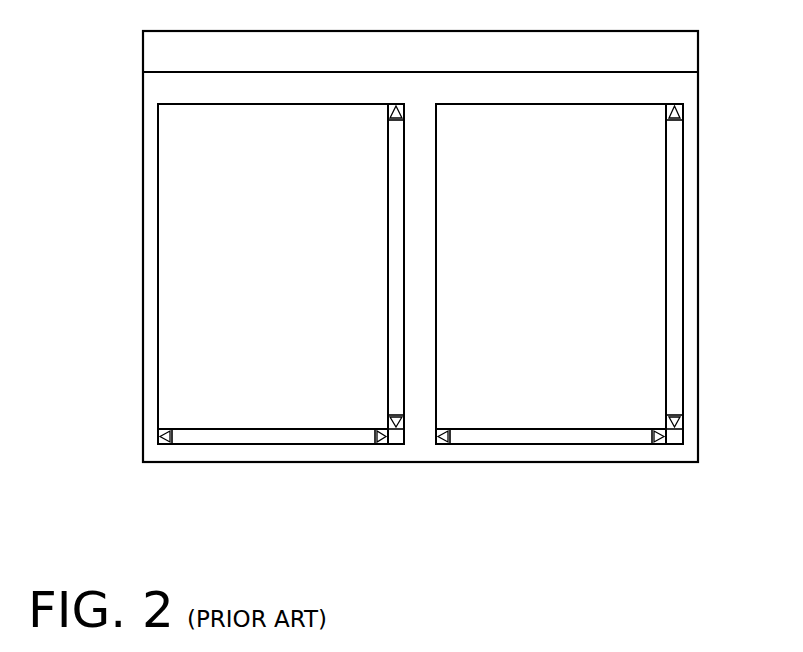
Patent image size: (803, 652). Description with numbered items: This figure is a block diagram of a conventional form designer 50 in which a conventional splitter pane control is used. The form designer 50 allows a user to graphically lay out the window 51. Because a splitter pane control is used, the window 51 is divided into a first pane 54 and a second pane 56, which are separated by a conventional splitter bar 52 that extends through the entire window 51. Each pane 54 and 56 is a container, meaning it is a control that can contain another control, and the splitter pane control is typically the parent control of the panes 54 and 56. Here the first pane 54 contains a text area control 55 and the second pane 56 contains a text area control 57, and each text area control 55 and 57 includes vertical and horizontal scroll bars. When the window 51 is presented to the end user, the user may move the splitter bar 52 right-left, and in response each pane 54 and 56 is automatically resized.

The conventional form designer 50 is at (68, 550).
The window 51 is at (698, 515).
The conventional splitter bar 52 is at (418, 462).
The first pane 54 is at (403, 472).
The text area control 55 is at (158, 253).
The second pane 56 is at (698, 472).
The text area control 57 is at (683, 147).